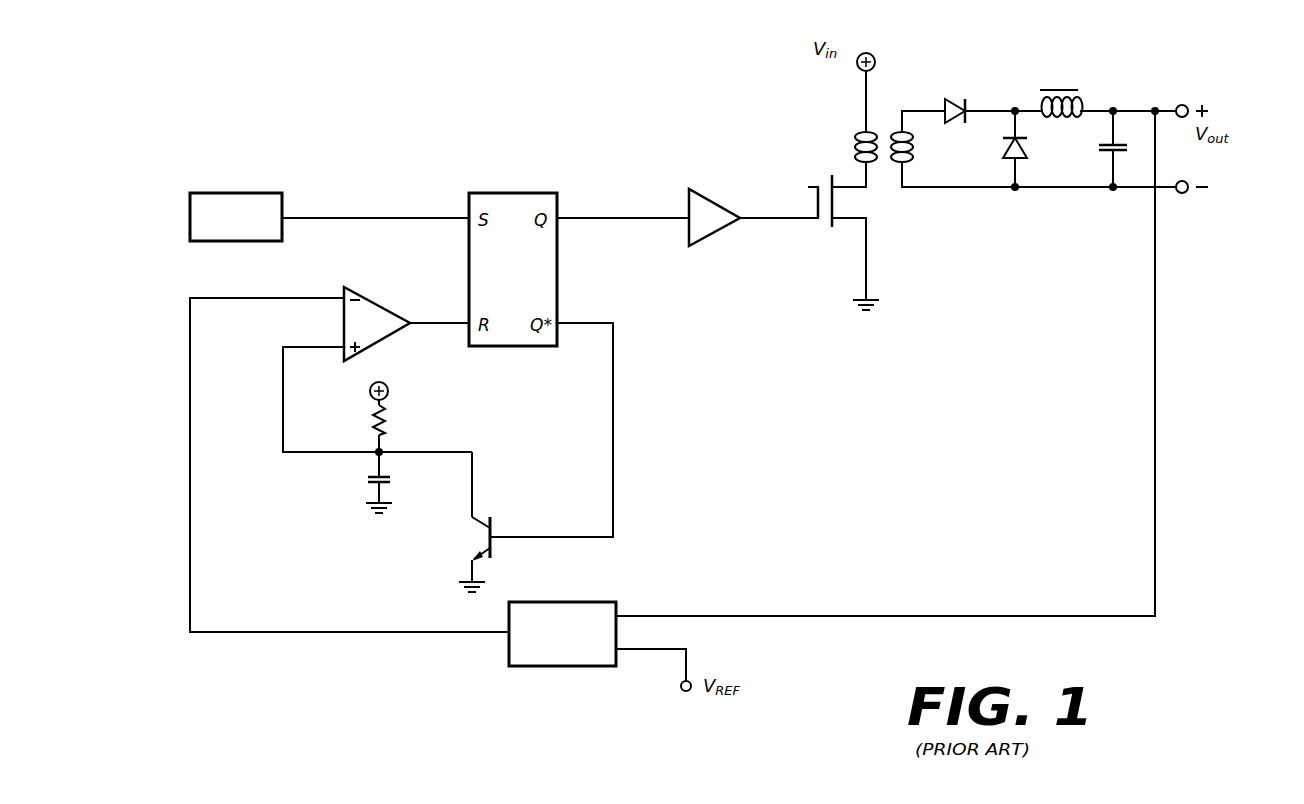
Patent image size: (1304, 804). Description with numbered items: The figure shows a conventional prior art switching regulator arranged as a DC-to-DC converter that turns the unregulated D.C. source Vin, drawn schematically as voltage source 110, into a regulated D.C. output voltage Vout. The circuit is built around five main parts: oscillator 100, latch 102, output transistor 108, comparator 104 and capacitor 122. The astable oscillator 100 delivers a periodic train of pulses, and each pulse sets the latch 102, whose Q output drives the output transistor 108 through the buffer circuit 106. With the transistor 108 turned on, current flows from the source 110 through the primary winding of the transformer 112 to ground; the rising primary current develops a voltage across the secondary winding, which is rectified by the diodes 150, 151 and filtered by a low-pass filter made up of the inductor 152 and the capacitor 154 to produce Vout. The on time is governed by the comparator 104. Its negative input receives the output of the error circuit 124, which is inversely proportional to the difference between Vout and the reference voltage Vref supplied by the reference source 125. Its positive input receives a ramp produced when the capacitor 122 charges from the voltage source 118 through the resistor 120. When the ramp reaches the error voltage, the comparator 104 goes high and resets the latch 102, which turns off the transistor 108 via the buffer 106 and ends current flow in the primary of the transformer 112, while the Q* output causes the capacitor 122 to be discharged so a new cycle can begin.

The oscillator 100 is at (248, 192).
The latch 102 is at (512, 193).
The comparator 104 is at (372, 297).
The buffer circuit 106 is at (718, 203).
The output transistor 108 is at (816, 178).
The voltage source 110 is at (875, 57).
The transformer 112 is at (876, 124).
The voltage source 118 is at (388, 386).
The resistor 120 is at (386, 420).
The capacitor 122 is at (368, 486).
The error circuit 124 is at (572, 602).
The reference source 125 is at (679, 691).
The diode 150 is at (955, 99).
The diode 151 is at (1002, 149).
The inductor 152 is at (1060, 89).
The capacitor 154 is at (1099, 154).